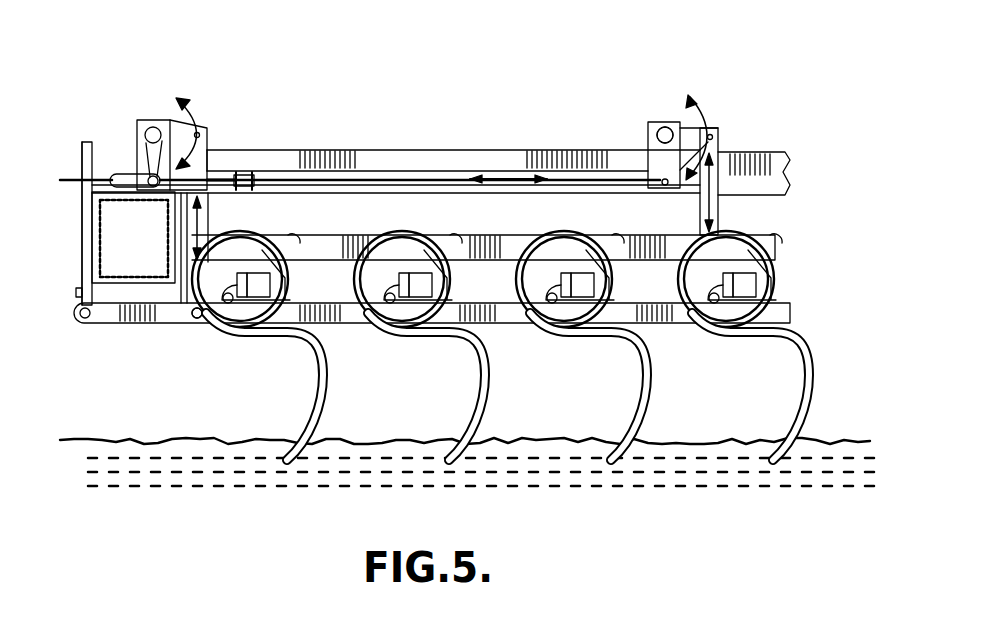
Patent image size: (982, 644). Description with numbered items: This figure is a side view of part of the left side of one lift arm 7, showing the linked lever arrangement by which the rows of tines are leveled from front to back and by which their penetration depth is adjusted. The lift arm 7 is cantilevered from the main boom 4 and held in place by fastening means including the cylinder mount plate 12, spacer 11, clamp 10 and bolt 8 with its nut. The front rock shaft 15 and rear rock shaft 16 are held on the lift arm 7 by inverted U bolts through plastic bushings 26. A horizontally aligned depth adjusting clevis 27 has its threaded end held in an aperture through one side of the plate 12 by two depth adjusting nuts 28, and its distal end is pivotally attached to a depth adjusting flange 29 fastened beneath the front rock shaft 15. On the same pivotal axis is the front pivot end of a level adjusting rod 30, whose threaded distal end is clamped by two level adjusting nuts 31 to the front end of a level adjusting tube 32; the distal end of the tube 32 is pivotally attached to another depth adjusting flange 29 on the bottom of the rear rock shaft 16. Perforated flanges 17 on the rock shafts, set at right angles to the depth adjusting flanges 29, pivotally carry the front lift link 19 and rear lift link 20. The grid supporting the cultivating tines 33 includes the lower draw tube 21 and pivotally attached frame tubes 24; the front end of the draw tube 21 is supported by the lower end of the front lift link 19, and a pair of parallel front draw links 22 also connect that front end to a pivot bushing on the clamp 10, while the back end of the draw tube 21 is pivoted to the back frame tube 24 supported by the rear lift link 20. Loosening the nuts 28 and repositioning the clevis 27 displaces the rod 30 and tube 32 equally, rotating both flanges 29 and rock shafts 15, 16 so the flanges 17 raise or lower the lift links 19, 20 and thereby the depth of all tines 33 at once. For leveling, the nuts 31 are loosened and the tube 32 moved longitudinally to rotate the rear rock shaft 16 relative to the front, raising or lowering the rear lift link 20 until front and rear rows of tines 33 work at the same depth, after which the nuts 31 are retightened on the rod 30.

The main boom 4 is at (100, 323).
The lift arm 7 is at (773, 151).
The bolt 8 is at (78, 293).
The clamp 10 is at (157, 325).
The spacer 11 is at (123, 325).
The cylinder mount plate 12 is at (82, 240).
The front rock shaft 15 is at (188, 112).
The rear rock shaft 16 is at (667, 127).
The perforated flange 17 is at (212, 128).
The front lift link 19 is at (206, 205).
The rear lift link 20 is at (718, 222).
The lower draw tube 21 is at (357, 325).
The front draw link 22 is at (183, 325).
The frame tube 24 is at (430, 303).
The plastic bushing 26 is at (147, 120).
The depth adjusting clevis 27 is at (112, 176).
The depth adjusting nut 28 is at (90, 142).
The depth adjusting flange 29 is at (212, 168).
The level adjusting rod 30 is at (245, 176).
The level adjusting nut 31 is at (245, 190).
The level adjusting tube 32 is at (410, 176).
The cultivating tine 33 is at (800, 390).